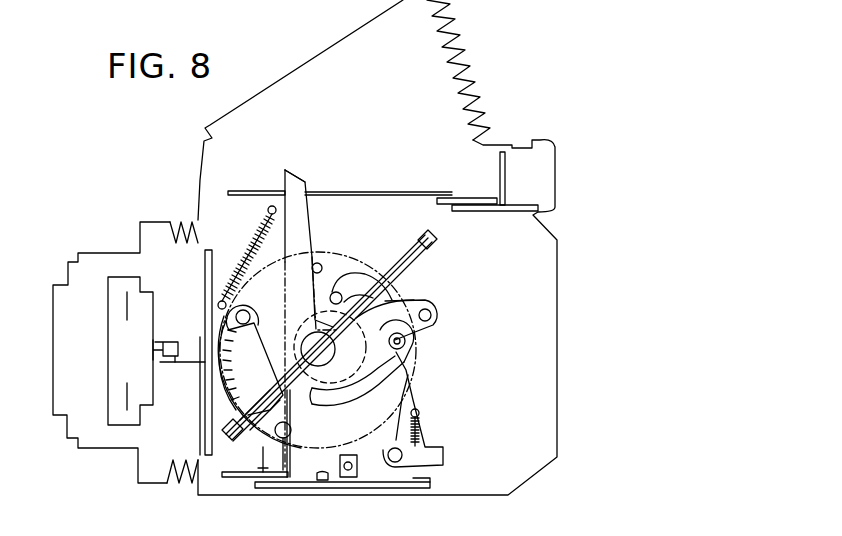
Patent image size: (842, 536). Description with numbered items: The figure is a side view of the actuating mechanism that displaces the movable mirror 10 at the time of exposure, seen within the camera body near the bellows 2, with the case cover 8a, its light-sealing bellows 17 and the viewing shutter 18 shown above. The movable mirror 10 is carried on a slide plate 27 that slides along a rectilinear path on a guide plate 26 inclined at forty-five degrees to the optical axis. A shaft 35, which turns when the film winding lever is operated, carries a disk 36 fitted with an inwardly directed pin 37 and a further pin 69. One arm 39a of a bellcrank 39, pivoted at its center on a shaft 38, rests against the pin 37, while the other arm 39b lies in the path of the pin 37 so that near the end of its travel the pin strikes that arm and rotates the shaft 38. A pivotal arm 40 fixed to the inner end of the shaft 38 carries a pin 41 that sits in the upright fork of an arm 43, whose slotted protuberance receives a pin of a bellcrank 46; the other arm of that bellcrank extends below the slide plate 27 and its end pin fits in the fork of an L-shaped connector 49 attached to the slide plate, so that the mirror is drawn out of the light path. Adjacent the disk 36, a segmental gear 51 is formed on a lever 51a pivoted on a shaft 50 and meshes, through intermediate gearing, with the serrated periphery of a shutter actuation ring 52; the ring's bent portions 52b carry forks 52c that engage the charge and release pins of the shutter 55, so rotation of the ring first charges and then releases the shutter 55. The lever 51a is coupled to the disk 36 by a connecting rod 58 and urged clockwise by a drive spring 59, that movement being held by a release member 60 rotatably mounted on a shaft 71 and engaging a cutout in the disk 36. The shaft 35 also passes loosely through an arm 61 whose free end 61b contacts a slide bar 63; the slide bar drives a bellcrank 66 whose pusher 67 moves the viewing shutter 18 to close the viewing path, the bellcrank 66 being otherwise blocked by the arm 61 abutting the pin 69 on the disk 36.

The cover 8a is at (331, 47).
The bellows 2 is at (183, 222).
The bellows 17 is at (473, 95).
The viewing shutter 18 is at (505, 160).
The shutter 55 is at (108, 336).
The shutter actuation ring 52 is at (205, 263).
The forwardly directed bent portion 52b is at (205, 300).
The fork 52c is at (172, 336).
The arm 61 is at (303, 205).
The free end 61b is at (296, 176).
The slide bar 63 is at (330, 191).
The bellcrank 66 is at (468, 198).
The pusher 67 is at (508, 200).
The drive spring 59 is at (248, 245).
The segmental gear 51 is at (218, 383).
The lever 51a is at (264, 310).
The movable mirror 10 is at (416, 270).
The slide plate 27 is at (396, 280).
The guide plate 26 is at (428, 240).
The shaft 35 is at (340, 344).
The pin 69 is at (320, 262).
The pin 37 is at (341, 291).
The disk 36 is at (376, 250).
The arm of bellcrank 39a is at (380, 268).
The shaft 50 is at (433, 315).
The shaft 38 is at (406, 343).
The bellcrank 39 is at (334, 396).
The other arm of bellcrank 39b is at (291, 432).
The pivotal arm 40 is at (410, 385).
The release member 60 is at (420, 414).
The shaft 71 is at (395, 462).
The bellcrank 46 is at (300, 488).
The arm 43 is at (333, 487).
The pin 41 is at (338, 464).
The L-shaped connector 49 is at (288, 453).
The connecting rod 58 is at (249, 461).